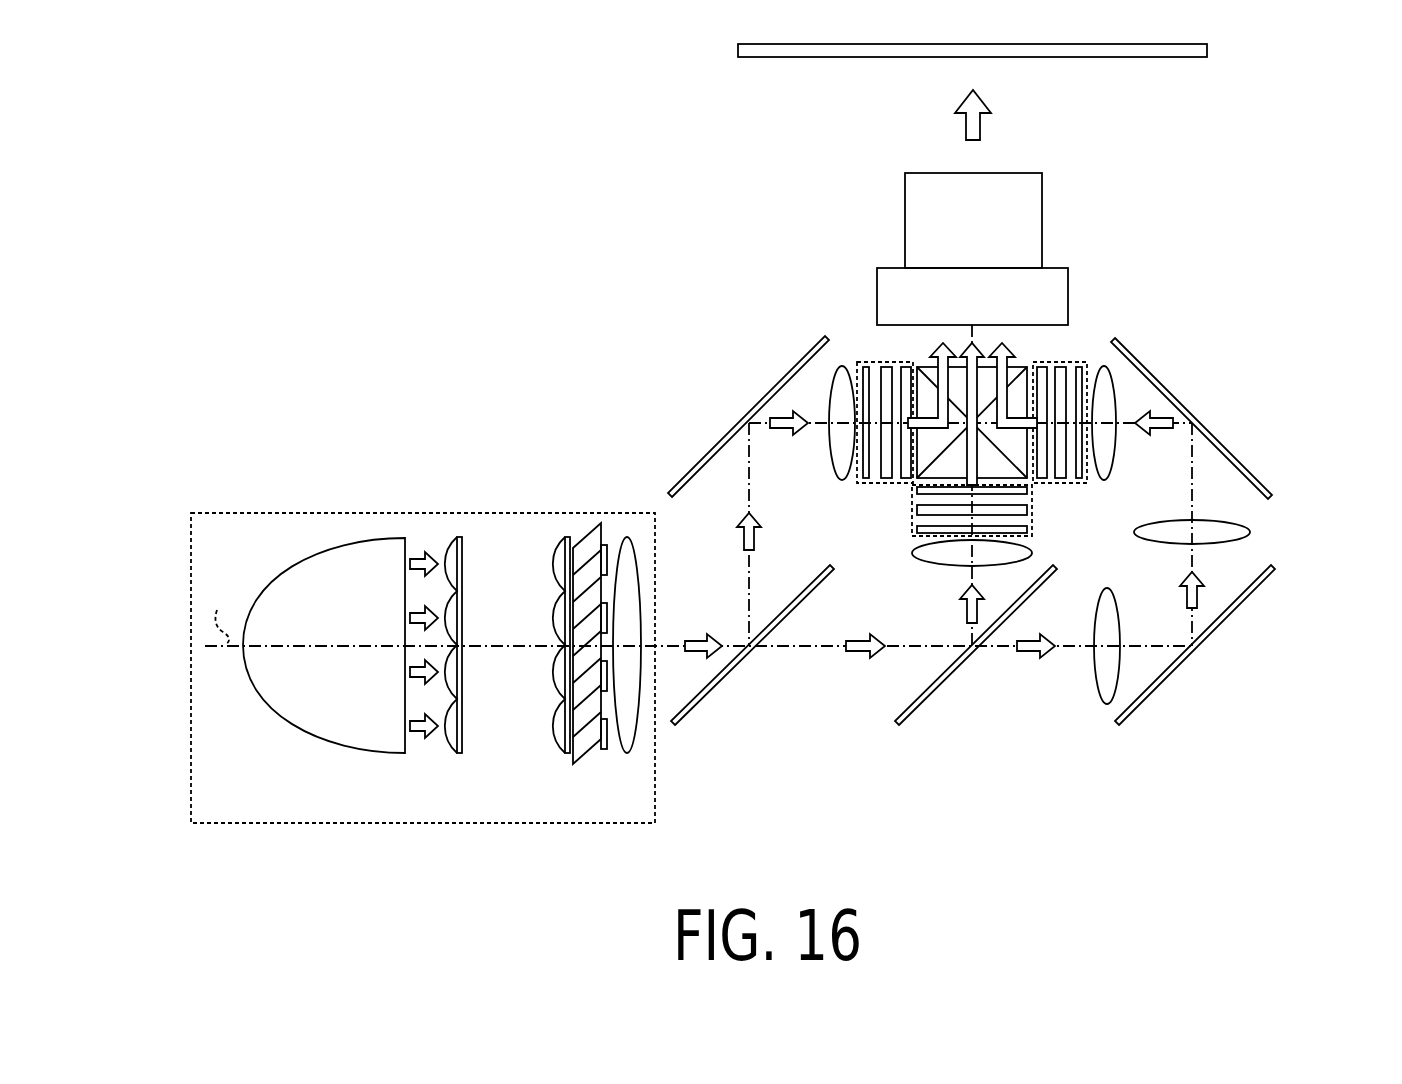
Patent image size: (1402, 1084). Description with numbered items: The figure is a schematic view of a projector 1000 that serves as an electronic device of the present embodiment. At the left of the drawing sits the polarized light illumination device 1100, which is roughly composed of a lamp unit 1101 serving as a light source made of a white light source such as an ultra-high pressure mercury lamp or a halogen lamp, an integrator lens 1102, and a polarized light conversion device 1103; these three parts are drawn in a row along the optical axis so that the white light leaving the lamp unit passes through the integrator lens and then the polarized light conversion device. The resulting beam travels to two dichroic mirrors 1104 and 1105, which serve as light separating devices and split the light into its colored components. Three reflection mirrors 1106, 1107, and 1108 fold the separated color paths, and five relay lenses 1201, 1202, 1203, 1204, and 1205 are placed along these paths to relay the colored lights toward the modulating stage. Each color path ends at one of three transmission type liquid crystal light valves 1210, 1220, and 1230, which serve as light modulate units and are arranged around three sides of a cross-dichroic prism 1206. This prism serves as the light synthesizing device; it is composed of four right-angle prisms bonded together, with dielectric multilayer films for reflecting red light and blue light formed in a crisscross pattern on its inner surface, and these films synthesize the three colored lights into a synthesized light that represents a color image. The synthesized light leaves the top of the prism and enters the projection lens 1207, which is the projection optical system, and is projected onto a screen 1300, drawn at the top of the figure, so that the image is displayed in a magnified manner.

The projector 1000 is at (1315, 144).
The polarized light illumination device 1100 is at (438, 513).
The lamp unit 1101 is at (318, 732).
The integrator lens 1102 is at (455, 758).
The polarized light conversion device 1103 is at (645, 768).
The dichroic mirror 1104 is at (713, 692).
The dichroic mirror 1105 is at (937, 692).
The reflection mirror 1106 is at (748, 420).
The reflection mirror 1107 is at (1155, 692).
The reflection mirror 1108 is at (1193, 418).
The relay lens 1201 is at (1103, 706).
The relay lens 1202 is at (1250, 530).
The relay lens 1203 is at (1104, 481).
The relay lens 1204 is at (913, 553).
The relay lens 1205 is at (842, 481).
The cross-dichroic prism 1206 is at (1038, 348).
The projection lens 1207 is at (1030, 218).
The transmission type liquid crystal light valve 1210 is at (858, 362).
The transmission type liquid crystal light valve 1220 is at (1032, 530).
The transmission type liquid crystal light valve 1230 is at (1088, 362).
The screen 1300 is at (1130, 58).